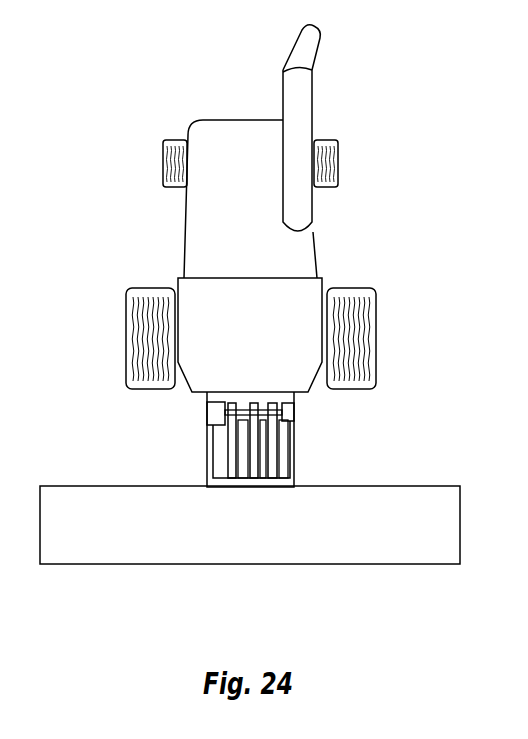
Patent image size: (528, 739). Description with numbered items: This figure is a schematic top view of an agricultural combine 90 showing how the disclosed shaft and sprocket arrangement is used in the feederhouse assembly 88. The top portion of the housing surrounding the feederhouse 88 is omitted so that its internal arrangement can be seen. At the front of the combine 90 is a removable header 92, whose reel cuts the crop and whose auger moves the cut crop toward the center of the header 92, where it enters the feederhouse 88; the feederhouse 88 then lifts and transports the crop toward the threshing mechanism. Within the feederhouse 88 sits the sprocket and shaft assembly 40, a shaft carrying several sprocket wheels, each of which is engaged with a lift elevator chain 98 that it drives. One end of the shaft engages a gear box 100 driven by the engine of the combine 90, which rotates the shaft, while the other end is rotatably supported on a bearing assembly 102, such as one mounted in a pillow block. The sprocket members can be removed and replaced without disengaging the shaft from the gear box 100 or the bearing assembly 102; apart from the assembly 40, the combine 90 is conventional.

The agricultural combine 90 is at (113, 208).
The sprocket and shaft assembly 40 is at (249, 402).
The feederhouse assembly 88 is at (257, 472).
The removable header 92 is at (63, 485).
The lift elevator chain 98 is at (231, 478).
The gear box 100 is at (215, 413).
The bearing assembly 102 is at (293, 412).